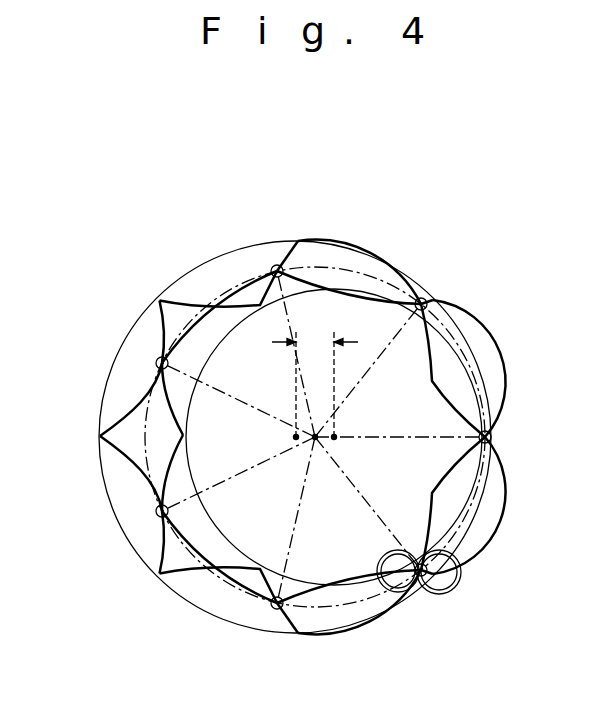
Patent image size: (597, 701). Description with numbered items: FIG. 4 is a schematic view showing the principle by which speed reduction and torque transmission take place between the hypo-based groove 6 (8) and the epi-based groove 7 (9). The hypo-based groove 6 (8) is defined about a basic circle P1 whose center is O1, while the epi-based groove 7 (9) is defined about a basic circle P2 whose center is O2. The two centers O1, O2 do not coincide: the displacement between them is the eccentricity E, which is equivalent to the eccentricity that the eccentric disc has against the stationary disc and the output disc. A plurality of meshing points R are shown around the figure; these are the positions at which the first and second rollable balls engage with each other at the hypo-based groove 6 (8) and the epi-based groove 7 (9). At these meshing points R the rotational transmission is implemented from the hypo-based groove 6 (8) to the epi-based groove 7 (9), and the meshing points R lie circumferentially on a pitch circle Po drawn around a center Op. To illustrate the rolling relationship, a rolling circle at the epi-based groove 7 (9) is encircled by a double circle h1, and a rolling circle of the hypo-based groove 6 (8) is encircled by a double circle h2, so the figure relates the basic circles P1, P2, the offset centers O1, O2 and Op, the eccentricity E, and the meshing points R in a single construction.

The hypo-based groove 6 is at (303, 450).
The hypo-based groove 8 is at (174, 578).
The epi-based groove 7 is at (372, 437).
The epi-based groove 9 is at (503, 344).
The meshing points R is at (158, 358).
The basic circle of the hypo-based groove P1 is at (128, 350).
The basic circle of the epi-based groove P2 is at (207, 358).
The pitch circle Po is at (343, 267).
The eccentricity E is at (315, 375).
The center of the pitch circle Op is at (277, 439).
The center of basic circle P1 O1 is at (323, 437).
The center of basic circle P2 O2 is at (354, 452).
The double circle h1 is at (461, 570).
The double circle h2 is at (372, 592).